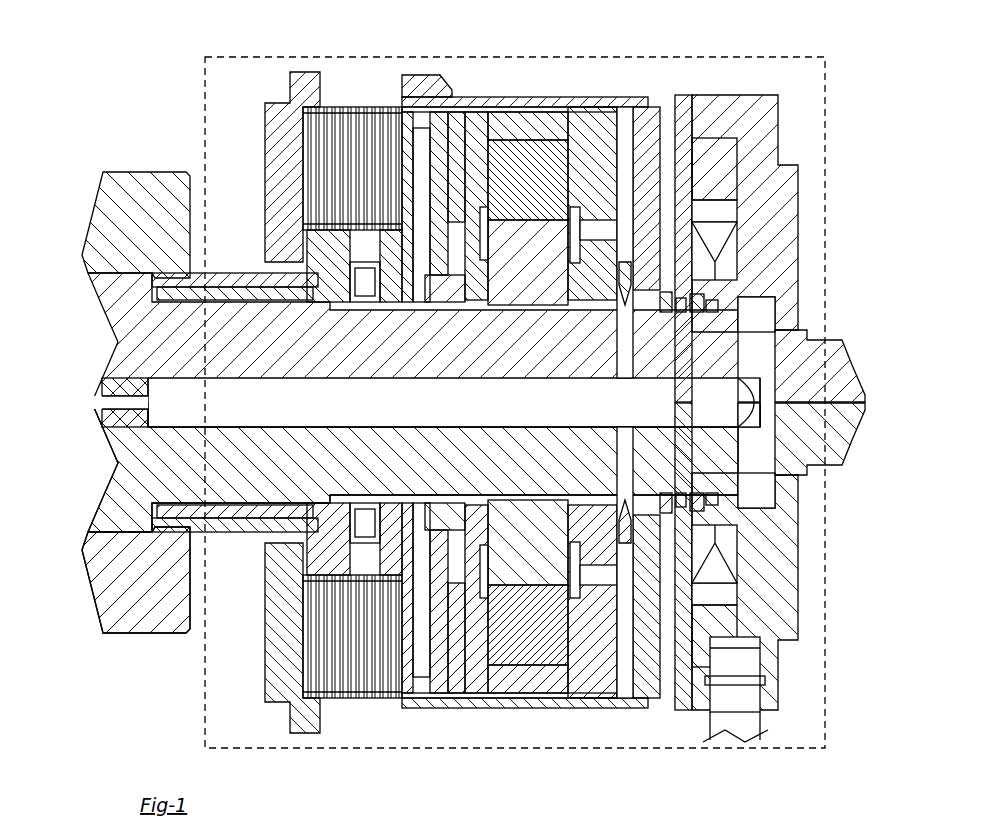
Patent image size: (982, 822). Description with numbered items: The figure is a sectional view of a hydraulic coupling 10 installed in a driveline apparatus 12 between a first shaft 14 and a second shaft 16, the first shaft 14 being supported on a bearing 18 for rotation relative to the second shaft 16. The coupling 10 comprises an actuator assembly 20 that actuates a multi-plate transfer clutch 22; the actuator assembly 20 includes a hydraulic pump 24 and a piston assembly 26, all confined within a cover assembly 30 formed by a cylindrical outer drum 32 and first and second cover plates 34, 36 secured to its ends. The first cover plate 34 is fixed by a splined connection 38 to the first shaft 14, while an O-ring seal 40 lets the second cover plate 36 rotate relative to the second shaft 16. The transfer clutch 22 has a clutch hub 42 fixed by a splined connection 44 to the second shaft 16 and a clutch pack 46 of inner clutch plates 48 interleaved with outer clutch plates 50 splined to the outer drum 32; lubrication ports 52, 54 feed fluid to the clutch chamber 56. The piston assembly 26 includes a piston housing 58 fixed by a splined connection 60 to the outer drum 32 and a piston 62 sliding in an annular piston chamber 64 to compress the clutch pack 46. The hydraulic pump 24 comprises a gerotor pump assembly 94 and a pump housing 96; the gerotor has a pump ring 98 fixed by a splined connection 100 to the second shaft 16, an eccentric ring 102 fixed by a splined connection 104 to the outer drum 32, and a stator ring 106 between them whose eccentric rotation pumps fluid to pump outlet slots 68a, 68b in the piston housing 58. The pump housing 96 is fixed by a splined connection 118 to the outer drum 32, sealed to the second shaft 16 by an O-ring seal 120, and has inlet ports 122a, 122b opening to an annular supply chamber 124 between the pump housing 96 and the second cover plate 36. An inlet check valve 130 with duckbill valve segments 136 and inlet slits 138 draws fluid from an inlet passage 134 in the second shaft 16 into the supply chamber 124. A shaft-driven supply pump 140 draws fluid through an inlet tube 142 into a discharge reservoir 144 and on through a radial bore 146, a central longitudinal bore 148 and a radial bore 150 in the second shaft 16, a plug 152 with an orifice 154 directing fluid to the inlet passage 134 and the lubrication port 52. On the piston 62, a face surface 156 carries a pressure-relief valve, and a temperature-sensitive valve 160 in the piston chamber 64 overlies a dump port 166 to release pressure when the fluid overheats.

The hydraulic coupling 10 is at (278, 77).
The driveline apparatus 12 is at (661, 53).
The first shaft 14 is at (118, 607).
The second shaft 16 is at (130, 350).
The bearing 18 is at (243, 296).
The actuator assembly 20 is at (485, 702).
The transfer clutch 22 is at (337, 702).
The hydraulic pump 24 is at (580, 100).
The piston assembly 26 is at (491, 107).
The cover assembly 30 is at (311, 70).
The outer drum 32 is at (620, 704).
The first cover plate 34 is at (288, 137).
The second cover plate 36 is at (700, 128).
The splined connection 38 is at (275, 258).
The O-ring seal 40 is at (662, 311).
The clutch hub 42 is at (440, 312).
The splined connection 44 is at (335, 318).
The clutch pack 46 is at (337, 150).
The inner clutch plates 48 is at (325, 590).
The outer clutch plates 50 is at (360, 100).
The lubrication port 52 is at (380, 558).
The lubrication port 54 is at (385, 103).
The clutch chamber 56 is at (410, 547).
The piston housing 58 is at (458, 513).
The splined connection 60 is at (423, 670).
The piston 62 is at (407, 705).
The piston chamber 64 is at (467, 146).
The pump outlet slot 68a is at (490, 230).
The pump outlet slot 68b is at (487, 571).
The gerotor pump assembly 94 is at (553, 303).
The pump housing 96 is at (600, 135).
The pump ring 98 is at (565, 517).
The splined connection 100 is at (517, 488).
The eccentric ring 102 is at (530, 677).
The splined connection 104 is at (513, 104).
The stator ring 106 is at (510, 128).
The splined connection 118 is at (587, 698).
The O-ring seal 120 is at (628, 315).
The inlet port 122a is at (692, 215).
The inlet port 122b is at (668, 570).
The supply chamber 124 is at (712, 272).
The inlet check valve 130 is at (700, 530).
The inlet passage 134 is at (662, 443).
The duckbill valve segments 136 is at (695, 255).
The inlet slits 138 is at (660, 588).
The supply pump 140 is at (738, 148).
The inlet tube 142 is at (745, 717).
The discharge reservoir 144 is at (762, 313).
The radial bore 146 is at (767, 357).
The central longitudinal bore 148 is at (732, 383).
The radial bore 150 is at (370, 310).
The plug 152 is at (112, 428).
The orifice 154 is at (120, 386).
The face surface 156 is at (365, 300).
The temperature-sensitive valve 160 is at (460, 270).
The dump port 166 is at (445, 285).